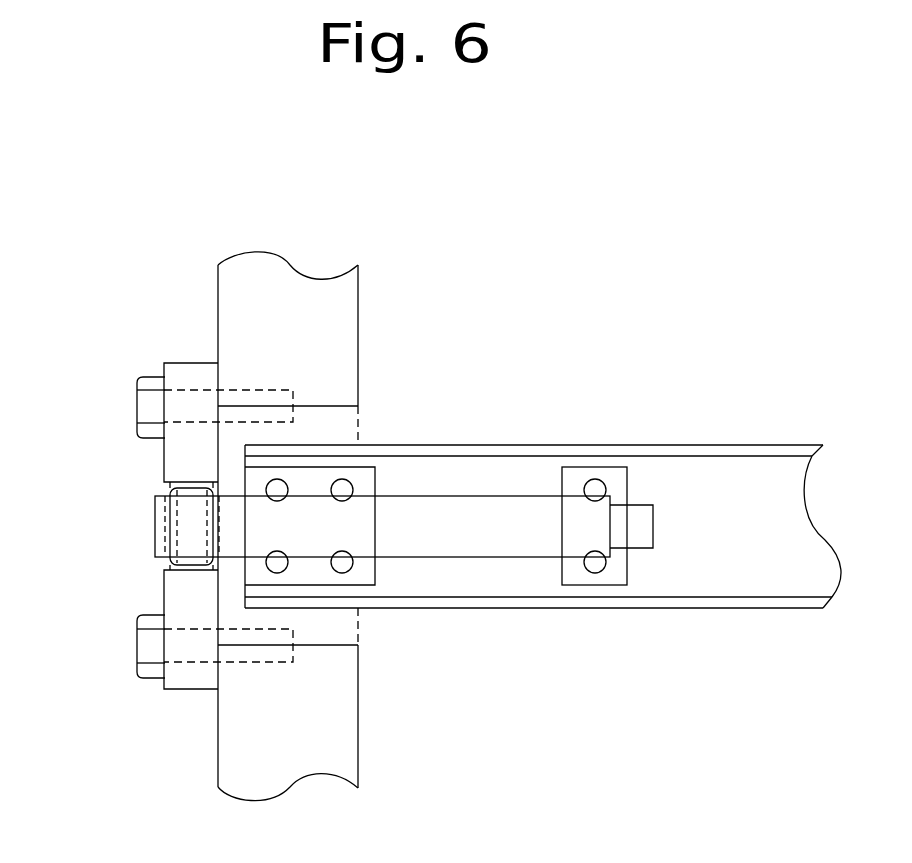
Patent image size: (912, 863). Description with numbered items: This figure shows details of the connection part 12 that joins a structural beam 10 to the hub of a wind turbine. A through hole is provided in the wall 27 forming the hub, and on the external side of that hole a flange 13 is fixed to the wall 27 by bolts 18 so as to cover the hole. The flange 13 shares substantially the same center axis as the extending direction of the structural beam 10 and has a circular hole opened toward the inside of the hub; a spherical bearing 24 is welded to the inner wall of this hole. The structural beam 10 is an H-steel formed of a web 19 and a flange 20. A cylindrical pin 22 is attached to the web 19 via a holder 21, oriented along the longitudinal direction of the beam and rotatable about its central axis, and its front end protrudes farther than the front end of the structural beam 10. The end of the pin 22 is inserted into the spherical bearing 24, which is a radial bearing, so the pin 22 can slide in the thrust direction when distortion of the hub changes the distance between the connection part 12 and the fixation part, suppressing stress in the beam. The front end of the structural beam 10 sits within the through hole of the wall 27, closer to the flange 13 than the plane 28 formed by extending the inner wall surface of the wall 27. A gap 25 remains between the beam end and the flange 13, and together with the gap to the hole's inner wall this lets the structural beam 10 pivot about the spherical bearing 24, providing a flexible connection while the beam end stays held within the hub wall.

The structural beam 10 is at (543, 465).
The connection part 12 is at (472, 278).
The flange 13 is at (180, 368).
The bolts 18 is at (150, 406).
The web 19 is at (815, 485).
The flange 20 is at (750, 450).
The holder 21 is at (365, 477).
The pin 22 is at (468, 500).
The spherical bearing 24 is at (163, 495).
The gap 25 is at (223, 580).
The wall 27 is at (228, 760).
The plane 28 is at (359, 625).